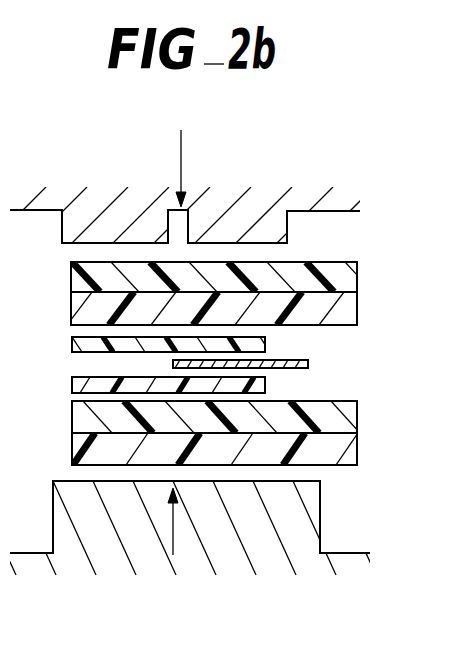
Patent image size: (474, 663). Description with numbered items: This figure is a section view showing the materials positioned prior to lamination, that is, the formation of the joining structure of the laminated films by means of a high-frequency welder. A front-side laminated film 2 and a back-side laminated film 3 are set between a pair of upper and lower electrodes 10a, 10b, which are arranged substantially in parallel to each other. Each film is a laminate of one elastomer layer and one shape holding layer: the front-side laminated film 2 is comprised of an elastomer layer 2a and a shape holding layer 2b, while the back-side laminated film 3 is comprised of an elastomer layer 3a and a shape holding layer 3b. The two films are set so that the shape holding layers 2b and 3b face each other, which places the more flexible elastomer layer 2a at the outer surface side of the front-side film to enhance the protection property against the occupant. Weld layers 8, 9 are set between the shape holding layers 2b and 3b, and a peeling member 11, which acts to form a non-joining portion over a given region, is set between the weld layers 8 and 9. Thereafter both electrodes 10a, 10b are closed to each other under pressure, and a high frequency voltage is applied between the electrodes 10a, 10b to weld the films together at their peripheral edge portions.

The upper electrode 10a is at (210, 217).
The lower electrode 10b is at (255, 505).
The front-side laminated film 2 is at (215, 276).
The elastomer layer 2a is at (352, 279).
The shape holding layer 2b is at (347, 302).
The weld layer 8 is at (70, 343).
The peeling member 11 is at (288, 359).
The weld layer 9 is at (70, 382).
The back-side laminated film 3 is at (206, 447).
The shape holding layer 3b is at (343, 413).
The elastomer layer 3a is at (347, 452).